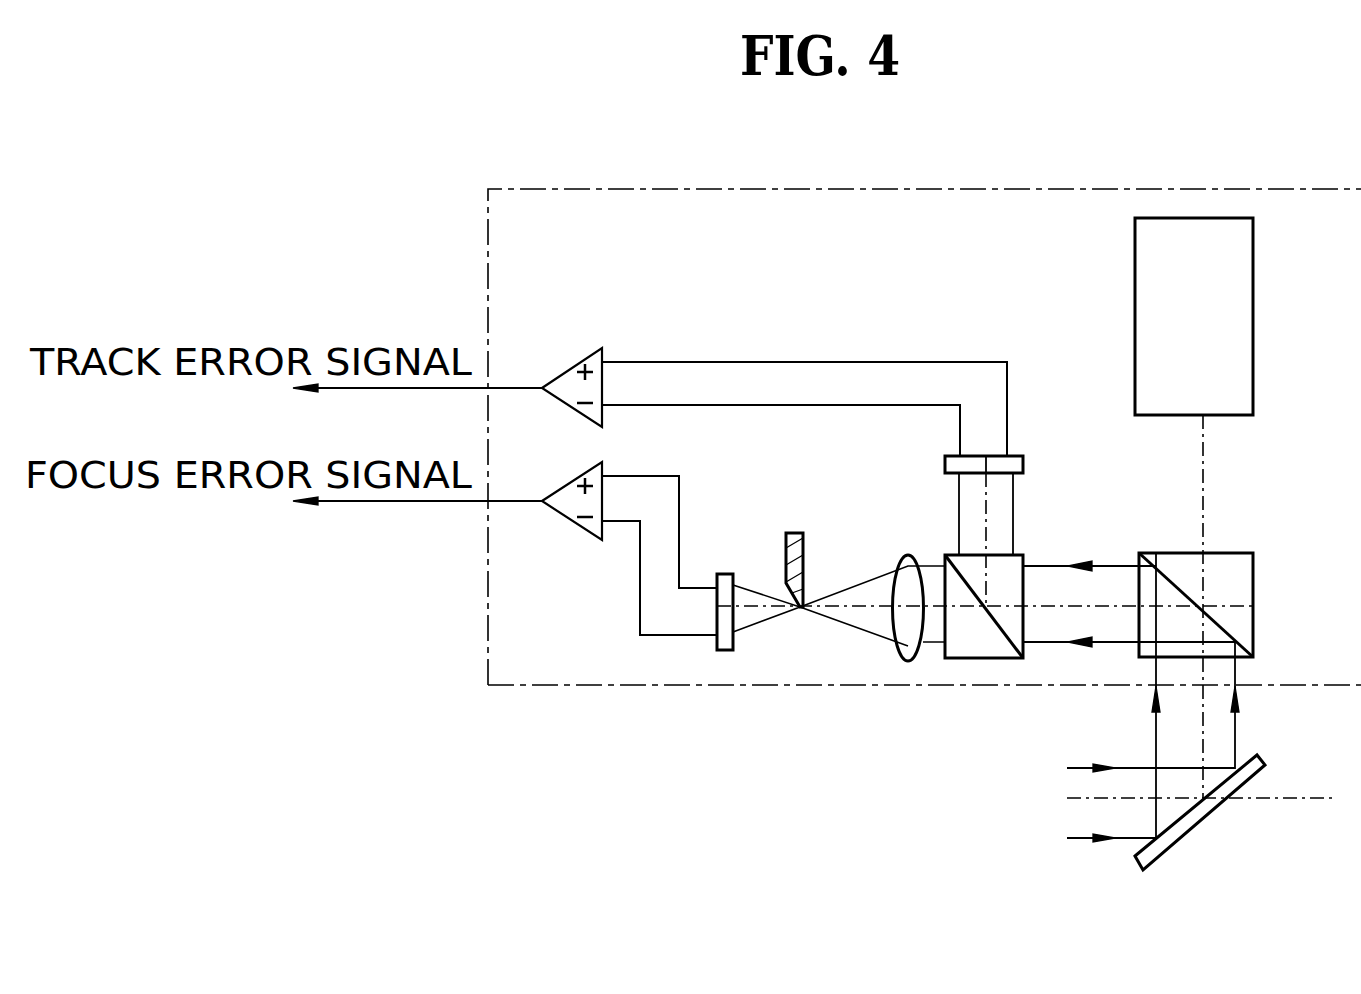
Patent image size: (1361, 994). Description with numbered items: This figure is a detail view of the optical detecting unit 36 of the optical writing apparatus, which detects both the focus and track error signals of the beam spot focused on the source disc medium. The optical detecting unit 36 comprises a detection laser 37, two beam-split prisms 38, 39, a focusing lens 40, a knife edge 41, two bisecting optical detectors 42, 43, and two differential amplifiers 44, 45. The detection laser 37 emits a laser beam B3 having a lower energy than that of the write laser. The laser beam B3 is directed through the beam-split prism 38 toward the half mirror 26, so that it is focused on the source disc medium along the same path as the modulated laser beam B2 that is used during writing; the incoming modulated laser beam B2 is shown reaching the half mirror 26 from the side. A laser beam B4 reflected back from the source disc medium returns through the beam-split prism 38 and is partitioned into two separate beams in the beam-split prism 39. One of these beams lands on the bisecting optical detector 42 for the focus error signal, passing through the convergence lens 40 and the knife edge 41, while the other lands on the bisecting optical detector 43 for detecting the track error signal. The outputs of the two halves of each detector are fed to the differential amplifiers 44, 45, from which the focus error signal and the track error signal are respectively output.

The optical detecting unit 36 is at (1075, 189).
The detection laser 37 is at (1253, 363).
The beam-split prism 38 is at (1253, 607).
The beam-split prism 39 is at (983, 660).
The focusing lens 40 is at (893, 657).
The knife edge 41 is at (798, 531).
The bisecting optical detector 42 is at (718, 651).
The bisecting optical detector 43 is at (1017, 455).
The differential amplifier 44 is at (560, 515).
The differential amplifier 45 is at (562, 400).
The half mirror 26 is at (1183, 838).
The modulated laser beam B2 is at (1295, 800).
The laser beam B3 is at (1203, 488).
The reflected laser beam B4 is at (1110, 565).